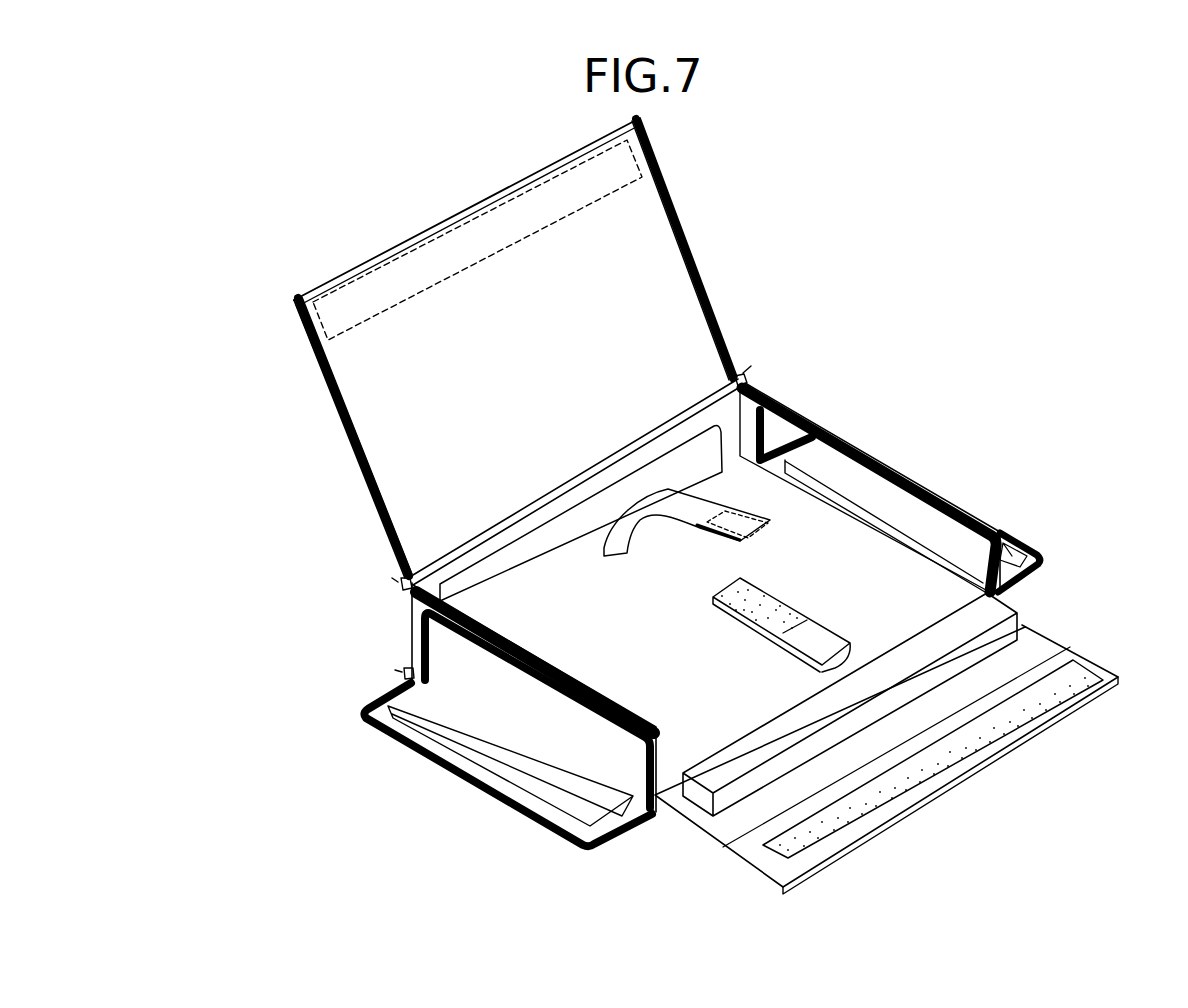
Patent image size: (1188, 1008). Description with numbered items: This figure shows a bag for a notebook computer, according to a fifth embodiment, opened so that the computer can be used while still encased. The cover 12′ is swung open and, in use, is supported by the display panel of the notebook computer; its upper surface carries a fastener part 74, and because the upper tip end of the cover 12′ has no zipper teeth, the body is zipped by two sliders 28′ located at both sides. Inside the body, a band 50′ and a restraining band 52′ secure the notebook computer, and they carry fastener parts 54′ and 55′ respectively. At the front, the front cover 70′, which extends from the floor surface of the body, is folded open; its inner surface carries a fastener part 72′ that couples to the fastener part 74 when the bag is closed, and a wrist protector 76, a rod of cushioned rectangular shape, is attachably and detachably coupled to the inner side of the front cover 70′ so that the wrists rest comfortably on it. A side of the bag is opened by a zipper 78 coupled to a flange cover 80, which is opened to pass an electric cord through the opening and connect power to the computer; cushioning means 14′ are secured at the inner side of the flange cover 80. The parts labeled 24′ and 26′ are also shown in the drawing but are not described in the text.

The cover 12′ is at (625, 266).
The lid side edge 26′ is at (333, 414).
The fastener part 74 is at (490, 237).
The sliders 28′ is at (745, 376).
The side wall 24′ is at (800, 414).
The zipper 78 is at (1042, 556).
The flange cover 80 is at (1022, 548).
The cushioning means 14′ is at (1003, 537).
The restraining band 52′ is at (668, 500).
The fastener part 55′ is at (737, 540).
The band 50′ is at (823, 632).
The fastener part 54′ is at (764, 607).
The wrist protector 76 is at (933, 673).
The front cover 70′ is at (733, 828).
The fastener part 72′ is at (897, 787).